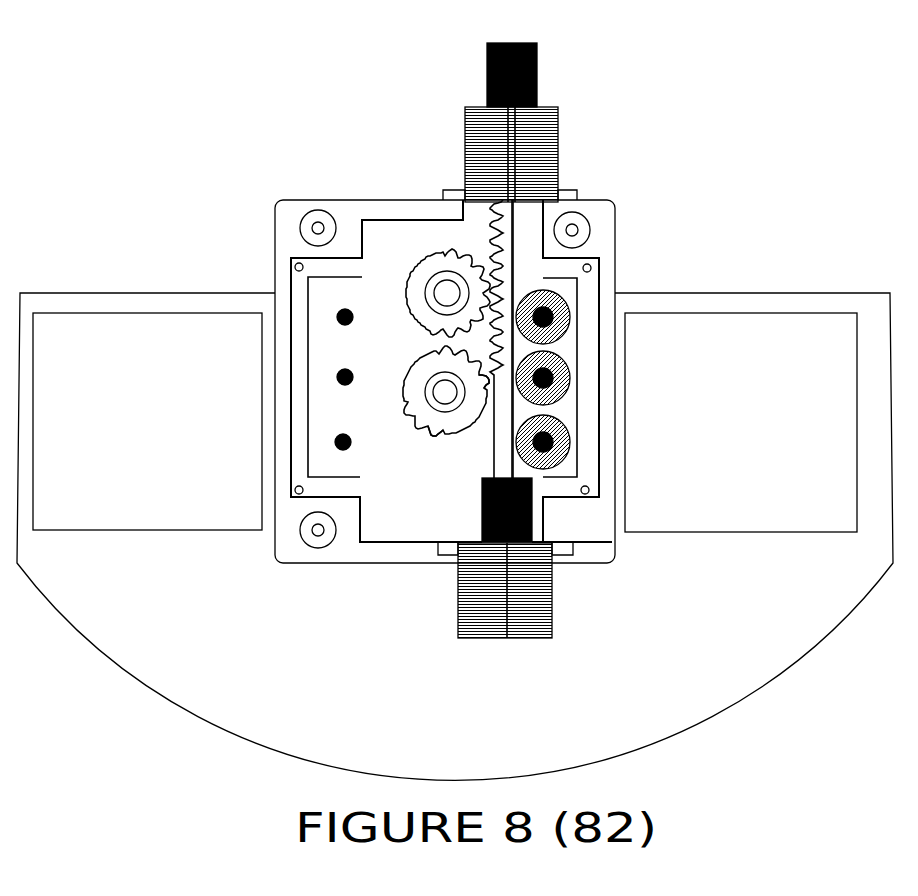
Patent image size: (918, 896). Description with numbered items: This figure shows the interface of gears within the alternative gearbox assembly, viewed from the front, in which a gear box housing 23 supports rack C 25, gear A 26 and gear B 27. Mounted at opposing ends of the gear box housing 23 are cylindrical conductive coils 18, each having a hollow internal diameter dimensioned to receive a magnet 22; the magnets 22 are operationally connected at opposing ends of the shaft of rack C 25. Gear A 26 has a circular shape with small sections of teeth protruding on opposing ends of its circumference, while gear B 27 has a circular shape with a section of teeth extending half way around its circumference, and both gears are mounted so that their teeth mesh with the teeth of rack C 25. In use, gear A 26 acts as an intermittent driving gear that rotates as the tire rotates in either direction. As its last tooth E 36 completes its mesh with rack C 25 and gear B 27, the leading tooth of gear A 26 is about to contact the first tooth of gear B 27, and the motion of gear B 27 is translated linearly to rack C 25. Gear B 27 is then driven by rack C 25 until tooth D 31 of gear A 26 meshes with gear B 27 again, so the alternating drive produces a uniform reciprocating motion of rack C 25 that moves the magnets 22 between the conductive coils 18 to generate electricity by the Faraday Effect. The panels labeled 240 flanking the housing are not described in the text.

The conductive coil 18 is at (548, 610).
The magnet 22 is at (530, 525).
The gear box housing 23 is at (417, 198).
The rack C 25 is at (508, 238).
The gear A 26 is at (442, 390).
The gear B 27 is at (444, 291).
The tooth D 31 is at (430, 440).
The tooth E 36 is at (490, 378).
The side panel 240 is at (127, 374).